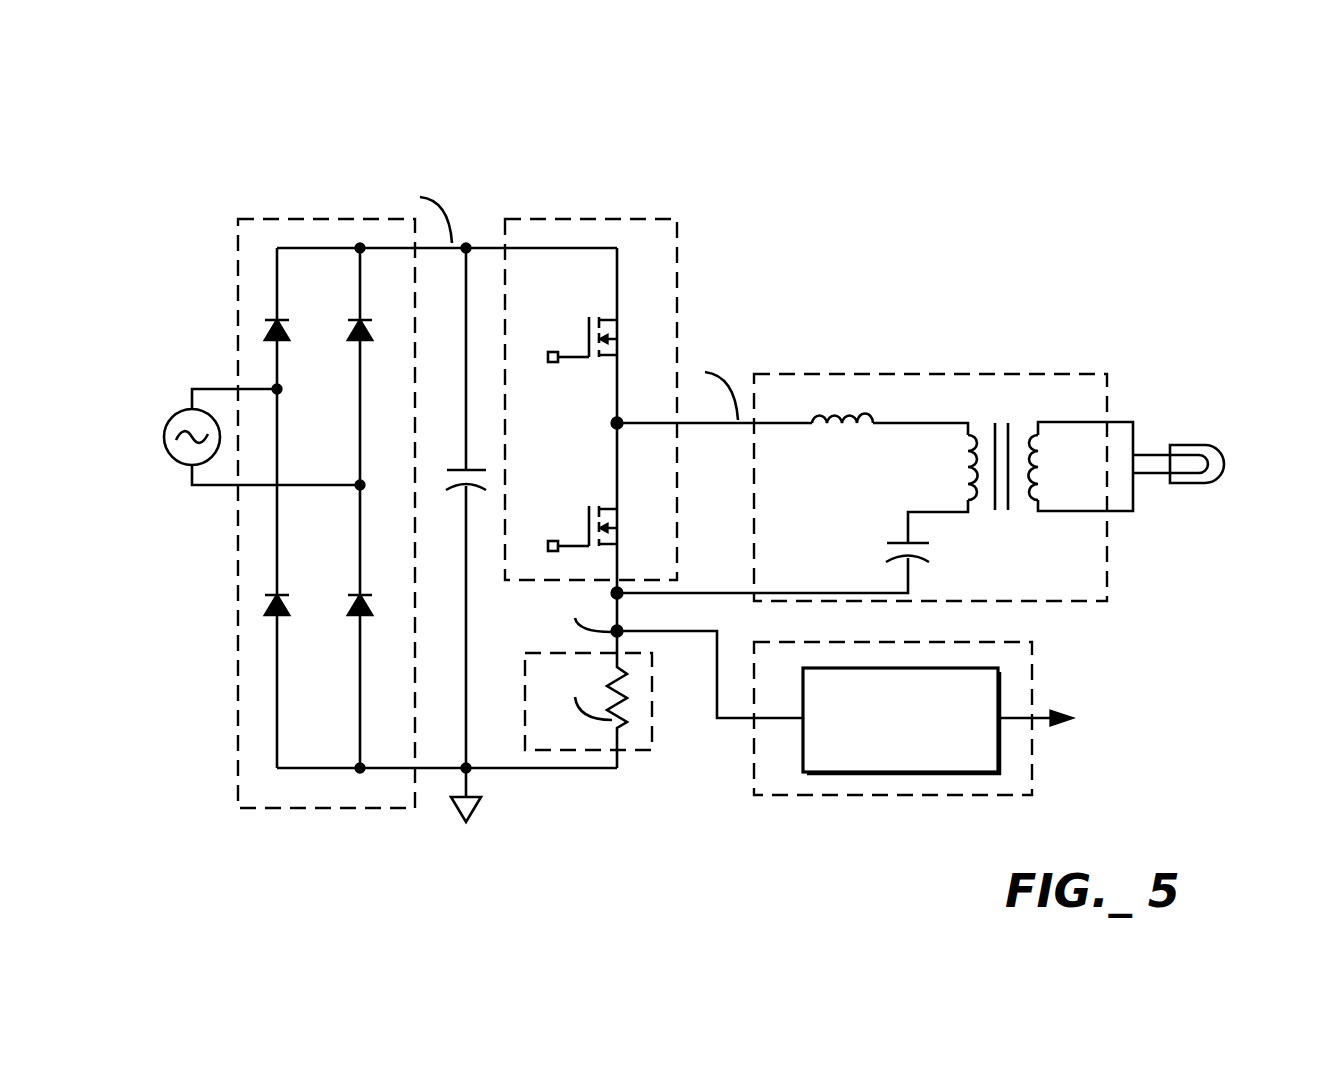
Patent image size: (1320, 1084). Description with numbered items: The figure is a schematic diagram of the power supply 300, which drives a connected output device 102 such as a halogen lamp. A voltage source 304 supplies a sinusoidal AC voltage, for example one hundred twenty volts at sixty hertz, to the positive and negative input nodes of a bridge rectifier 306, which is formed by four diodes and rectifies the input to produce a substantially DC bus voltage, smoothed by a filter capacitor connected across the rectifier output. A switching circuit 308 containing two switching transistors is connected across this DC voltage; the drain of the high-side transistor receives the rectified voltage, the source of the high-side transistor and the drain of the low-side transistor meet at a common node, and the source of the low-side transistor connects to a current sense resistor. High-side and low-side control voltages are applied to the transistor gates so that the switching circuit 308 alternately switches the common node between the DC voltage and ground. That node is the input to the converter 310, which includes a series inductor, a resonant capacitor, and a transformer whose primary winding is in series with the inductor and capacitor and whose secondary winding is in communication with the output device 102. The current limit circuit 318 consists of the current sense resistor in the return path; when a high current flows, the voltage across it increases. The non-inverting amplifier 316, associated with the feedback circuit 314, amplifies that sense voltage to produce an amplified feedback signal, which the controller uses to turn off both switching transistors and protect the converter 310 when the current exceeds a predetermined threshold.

The power supply 300 is at (780, 171).
The voltage source 304 is at (190, 405).
The bridge rectifier 306 is at (257, 217).
The switching circuit 308 is at (550, 218).
The converter 310 is at (883, 373).
The feedback circuit 314 is at (1033, 753).
The non-inverting amplifier 316 is at (901, 721).
The current limit circuit 318 is at (648, 733).
The output device 102 is at (1198, 445).